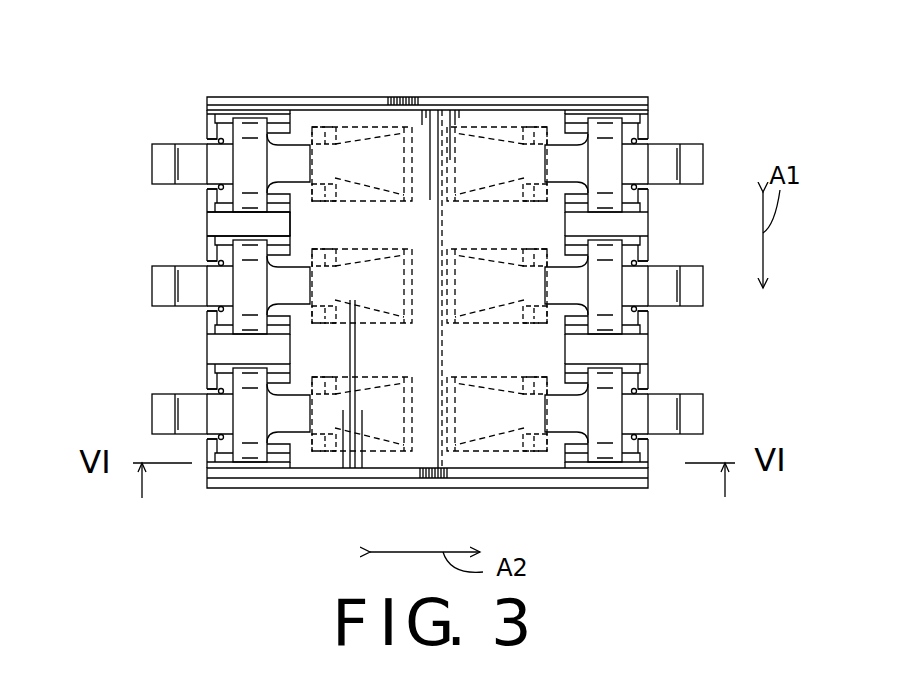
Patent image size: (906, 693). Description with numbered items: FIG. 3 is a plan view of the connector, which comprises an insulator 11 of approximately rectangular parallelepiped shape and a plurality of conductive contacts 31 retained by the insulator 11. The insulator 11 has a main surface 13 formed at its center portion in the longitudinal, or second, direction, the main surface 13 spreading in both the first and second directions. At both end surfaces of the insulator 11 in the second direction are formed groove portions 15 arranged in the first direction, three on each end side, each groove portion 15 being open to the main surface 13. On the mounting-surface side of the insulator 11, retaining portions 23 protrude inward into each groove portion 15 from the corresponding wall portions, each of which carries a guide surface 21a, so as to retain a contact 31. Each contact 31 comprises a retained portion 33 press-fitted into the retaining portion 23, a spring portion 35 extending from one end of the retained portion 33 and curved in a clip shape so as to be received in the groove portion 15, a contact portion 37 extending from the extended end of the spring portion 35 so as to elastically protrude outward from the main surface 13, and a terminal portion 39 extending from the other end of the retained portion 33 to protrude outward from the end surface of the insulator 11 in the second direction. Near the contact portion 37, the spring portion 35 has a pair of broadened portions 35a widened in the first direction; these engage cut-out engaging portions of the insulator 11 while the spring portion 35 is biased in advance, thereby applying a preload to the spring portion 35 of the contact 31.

The insulator 11 is at (434, 96).
The main surface 13 is at (425, 118).
The groove portion 15 is at (280, 138).
The guide surface 21a is at (213, 195).
The retaining portion 23 is at (225, 463).
The conductive contact 31 is at (140, 147).
The retained portion 33 is at (210, 135).
The spring portion 35 is at (386, 126).
The broadened portion 35a is at (323, 126).
The contact portion 37 is at (247, 140).
The terminal portion 39 is at (158, 172).